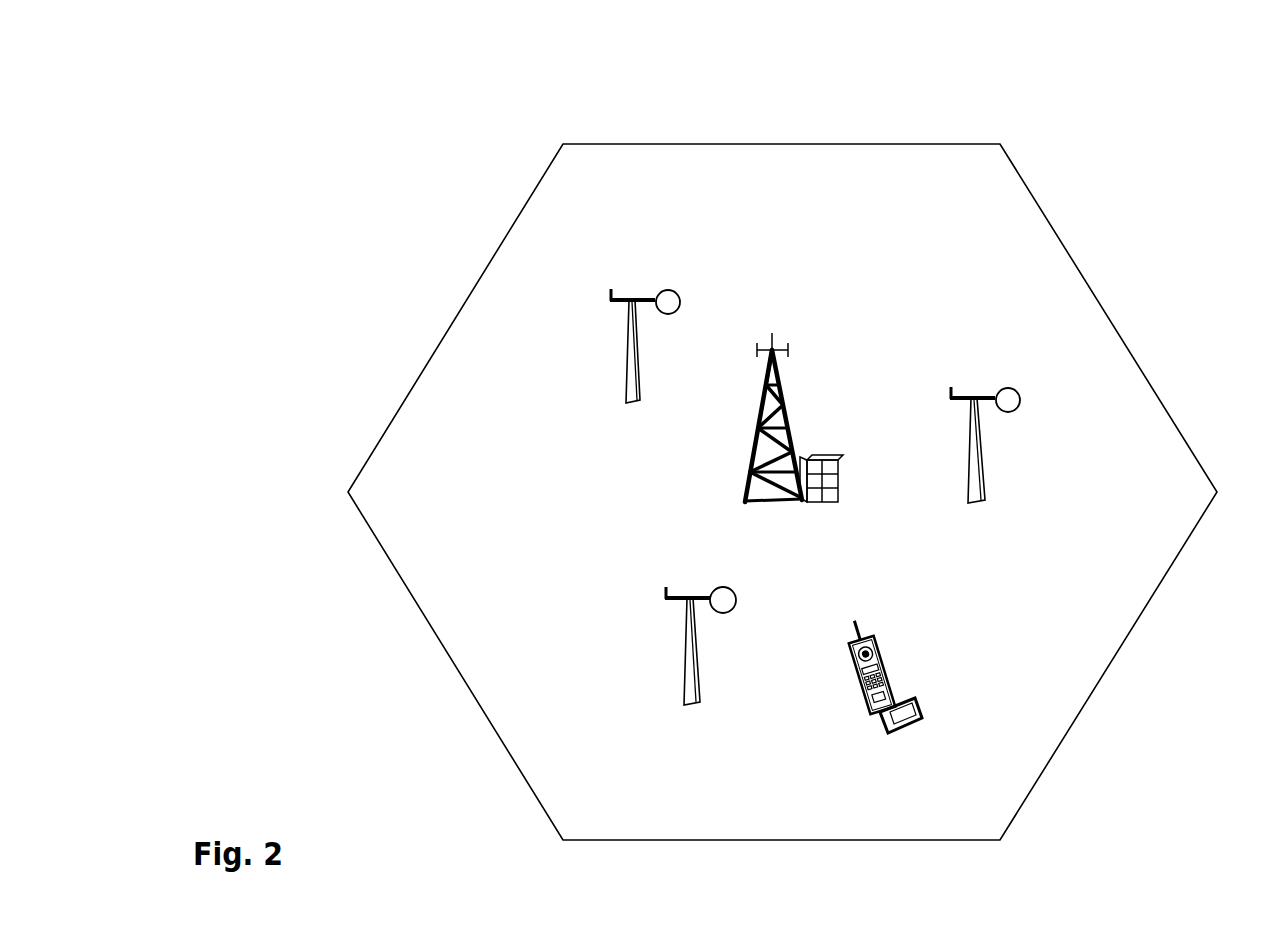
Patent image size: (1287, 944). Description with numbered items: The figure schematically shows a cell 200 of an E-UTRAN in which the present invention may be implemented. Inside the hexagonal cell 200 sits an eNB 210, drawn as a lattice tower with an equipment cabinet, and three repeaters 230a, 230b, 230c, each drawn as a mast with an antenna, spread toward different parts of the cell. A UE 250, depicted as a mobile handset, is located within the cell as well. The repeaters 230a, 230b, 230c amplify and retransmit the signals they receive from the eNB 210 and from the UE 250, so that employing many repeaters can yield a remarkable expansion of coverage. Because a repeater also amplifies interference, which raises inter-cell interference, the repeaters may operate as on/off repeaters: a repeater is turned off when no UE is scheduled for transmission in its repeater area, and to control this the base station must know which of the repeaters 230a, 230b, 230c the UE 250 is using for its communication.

The cell 200 is at (930, 168).
The eNB 210 is at (787, 353).
The repeater 230a is at (1000, 390).
The repeater 230b is at (680, 708).
The repeater 230c is at (650, 290).
The UE 250 is at (898, 733).